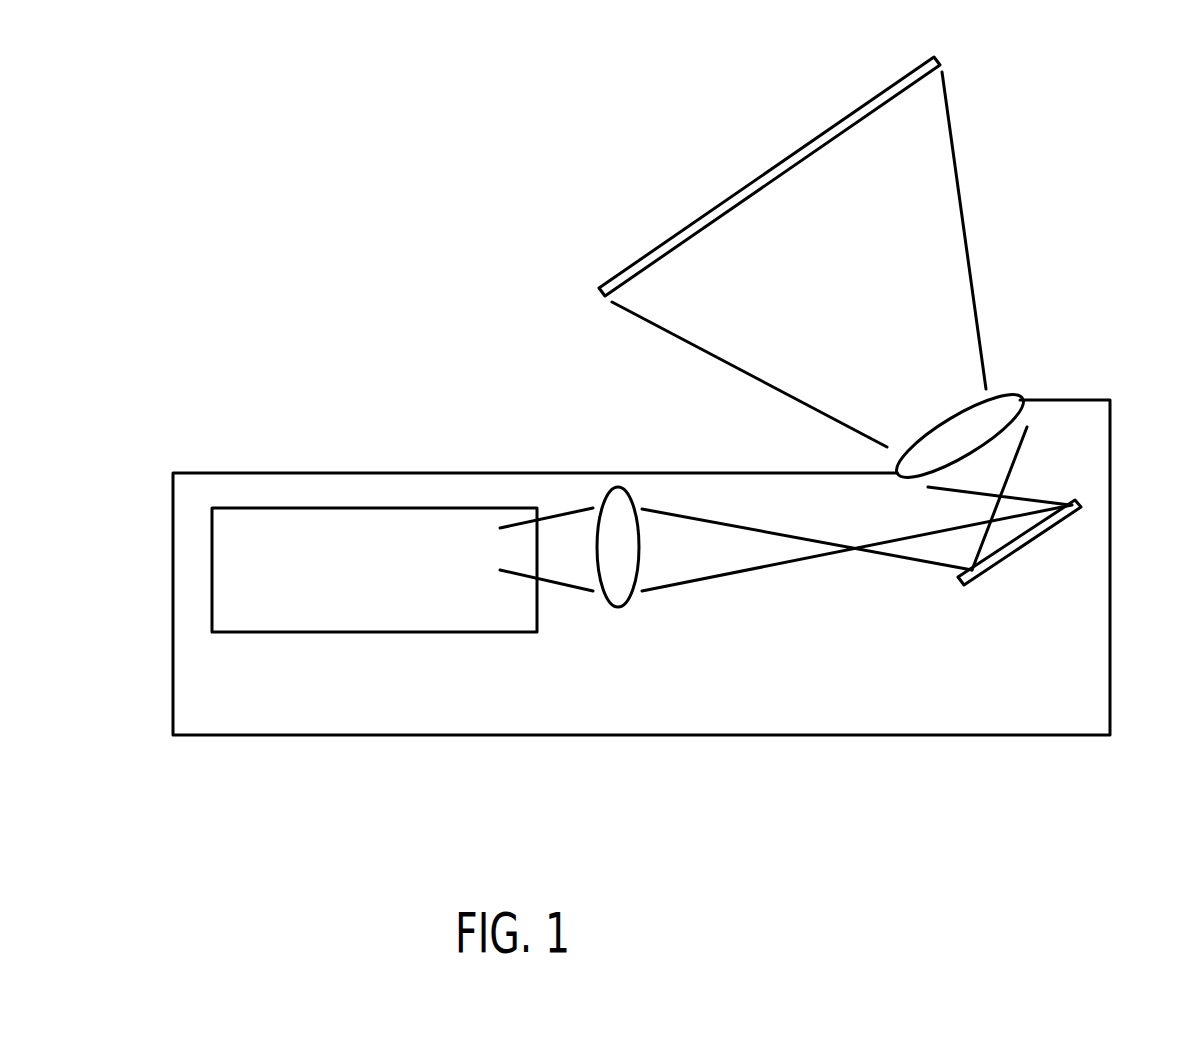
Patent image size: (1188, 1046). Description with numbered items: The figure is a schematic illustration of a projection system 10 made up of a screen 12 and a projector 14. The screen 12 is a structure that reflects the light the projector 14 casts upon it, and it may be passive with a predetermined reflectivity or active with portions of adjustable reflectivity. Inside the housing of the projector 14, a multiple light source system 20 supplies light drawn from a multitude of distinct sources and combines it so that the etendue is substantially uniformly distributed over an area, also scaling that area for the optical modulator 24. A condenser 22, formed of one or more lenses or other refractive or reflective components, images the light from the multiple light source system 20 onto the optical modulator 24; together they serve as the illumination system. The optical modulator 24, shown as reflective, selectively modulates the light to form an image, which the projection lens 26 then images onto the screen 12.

The projection system 10 is at (337, 233).
The screen 12 is at (765, 171).
The projector 14 is at (1112, 640).
The multiple light source system 20 is at (312, 632).
The condenser 22 is at (618, 608).
The optical modulator 24 is at (965, 587).
The projection lens 26 is at (1016, 398).